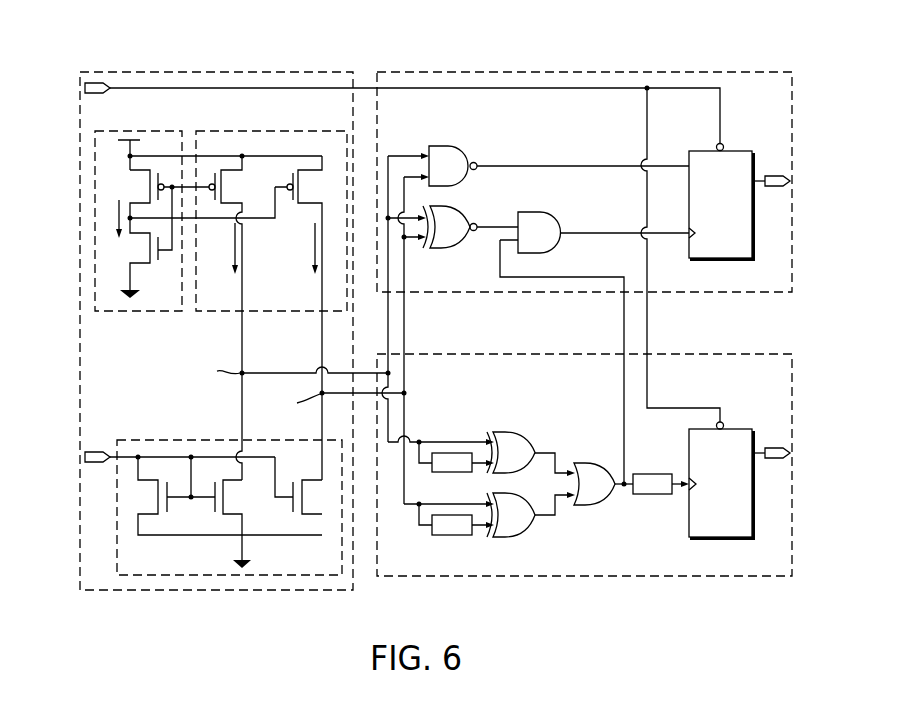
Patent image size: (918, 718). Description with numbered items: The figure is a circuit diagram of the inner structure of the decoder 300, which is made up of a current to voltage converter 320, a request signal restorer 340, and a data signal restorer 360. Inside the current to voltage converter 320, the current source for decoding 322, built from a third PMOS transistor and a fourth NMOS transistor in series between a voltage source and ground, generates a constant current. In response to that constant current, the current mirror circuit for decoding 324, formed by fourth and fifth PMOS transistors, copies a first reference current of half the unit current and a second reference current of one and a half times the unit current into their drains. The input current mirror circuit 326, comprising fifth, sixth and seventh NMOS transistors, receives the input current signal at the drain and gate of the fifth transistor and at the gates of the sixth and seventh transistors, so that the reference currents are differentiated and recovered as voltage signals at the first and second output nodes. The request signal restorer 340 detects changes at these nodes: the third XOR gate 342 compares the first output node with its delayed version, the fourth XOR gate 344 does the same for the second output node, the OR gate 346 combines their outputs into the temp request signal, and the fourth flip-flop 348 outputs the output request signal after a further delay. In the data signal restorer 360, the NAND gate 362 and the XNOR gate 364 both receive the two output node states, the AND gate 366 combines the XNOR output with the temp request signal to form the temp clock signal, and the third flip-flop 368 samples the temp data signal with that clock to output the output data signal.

The decoder 300 is at (418, 22).
The current to voltage converter 320 is at (245, 70).
The current source for decoding 322 is at (150, 130).
The current mirror circuit for decoding 324 is at (280, 130).
The input current mirror circuit 326 is at (223, 577).
The request signal restorer 340 is at (600, 577).
The third XOR gate 342 is at (522, 432).
The fourth XOR gate 344 is at (522, 537).
The OR gate 346 is at (603, 465).
The fourth flip-flop 348 is at (737, 428).
The data signal restorer 360 is at (577, 70).
The NAND gate 362 is at (453, 146).
The XNOR gate 364 is at (457, 245).
The AND gate 366 is at (547, 213).
The third flip-flop 368 is at (737, 148).